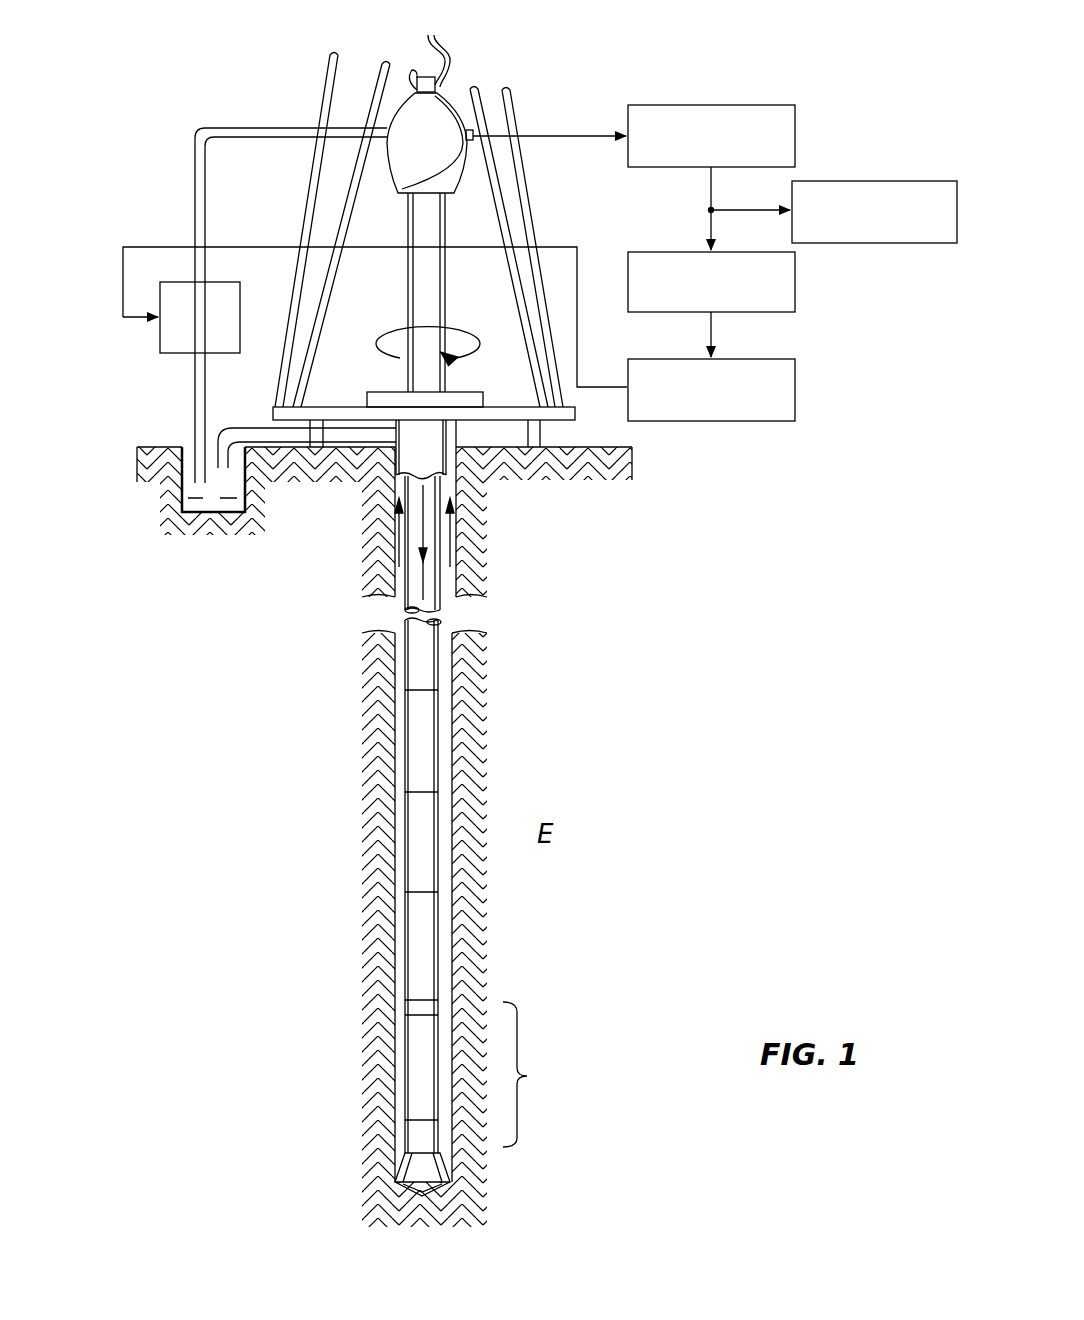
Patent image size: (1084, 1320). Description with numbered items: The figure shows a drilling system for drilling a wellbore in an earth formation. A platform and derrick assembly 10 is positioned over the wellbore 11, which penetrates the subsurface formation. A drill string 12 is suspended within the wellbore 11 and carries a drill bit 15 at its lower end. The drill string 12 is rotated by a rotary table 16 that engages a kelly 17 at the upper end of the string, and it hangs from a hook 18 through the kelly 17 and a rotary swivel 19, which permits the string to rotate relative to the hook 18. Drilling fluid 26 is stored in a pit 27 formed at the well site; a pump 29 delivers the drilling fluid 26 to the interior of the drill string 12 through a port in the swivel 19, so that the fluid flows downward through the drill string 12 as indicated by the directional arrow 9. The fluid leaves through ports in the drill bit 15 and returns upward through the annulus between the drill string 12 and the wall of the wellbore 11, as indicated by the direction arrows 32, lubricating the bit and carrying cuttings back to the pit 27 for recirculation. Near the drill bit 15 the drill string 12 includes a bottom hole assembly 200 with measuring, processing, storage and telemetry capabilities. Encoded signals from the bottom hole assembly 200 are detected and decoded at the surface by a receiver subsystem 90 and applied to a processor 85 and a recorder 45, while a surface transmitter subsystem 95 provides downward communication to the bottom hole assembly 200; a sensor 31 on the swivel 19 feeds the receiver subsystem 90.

The directional arrow 9 is at (422, 530).
The platform and derrick assembly 10 is at (612, 423).
The wellbore 11 is at (452, 597).
The drill string 12 is at (416, 680).
The drill bit 15 is at (412, 1163).
The rotary table 16 is at (463, 395).
The kelly 17 is at (432, 222).
The hook 18 is at (427, 42).
The rotary swivel 19 is at (413, 180).
The drilling fluid 26 is at (215, 508).
The pit 27 is at (178, 490).
The pump 29 is at (177, 354).
The sensor 31 is at (475, 140).
The direction arrows 32 is at (452, 545).
The recorder 45 is at (847, 181).
The processor 85 is at (797, 285).
The receiver subsystem 90 is at (731, 105).
The surface transmitter subsystem 95 is at (797, 393).
The bottom hole assembly 200 is at (527, 1076).